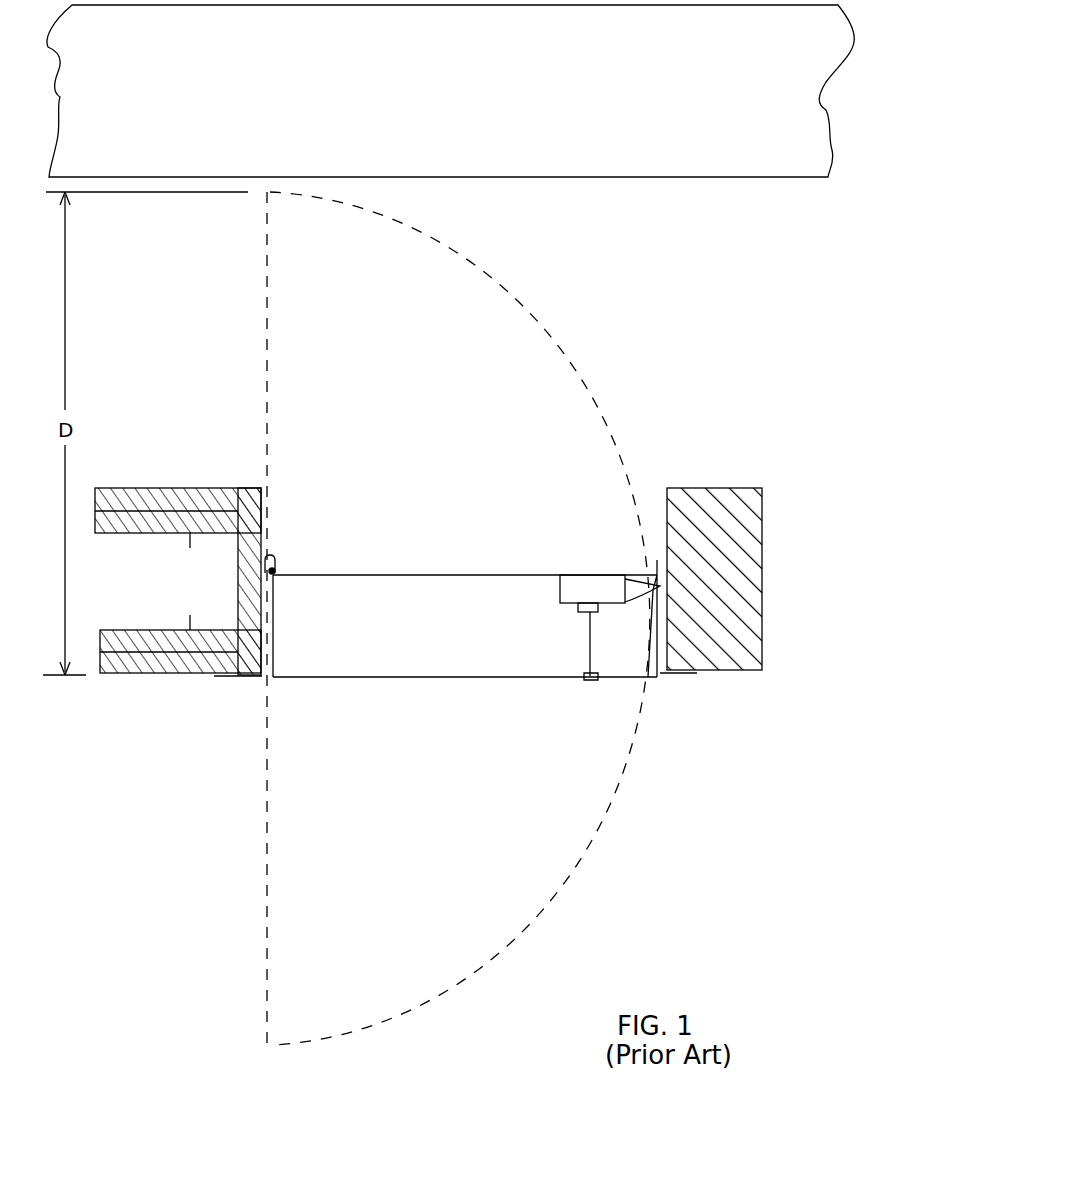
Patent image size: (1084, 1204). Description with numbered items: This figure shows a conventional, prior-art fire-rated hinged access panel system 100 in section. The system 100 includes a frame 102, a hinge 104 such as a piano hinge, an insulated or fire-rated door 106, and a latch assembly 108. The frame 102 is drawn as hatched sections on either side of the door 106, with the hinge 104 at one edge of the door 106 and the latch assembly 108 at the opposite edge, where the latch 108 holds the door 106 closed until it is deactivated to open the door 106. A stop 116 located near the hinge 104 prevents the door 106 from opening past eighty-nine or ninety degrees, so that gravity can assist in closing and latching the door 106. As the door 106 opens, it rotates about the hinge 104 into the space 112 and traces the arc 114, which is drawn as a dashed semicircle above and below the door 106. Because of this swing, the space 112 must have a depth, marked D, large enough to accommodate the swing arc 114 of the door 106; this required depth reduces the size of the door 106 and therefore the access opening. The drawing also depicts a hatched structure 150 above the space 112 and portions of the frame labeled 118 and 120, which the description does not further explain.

The hinged access panel system 100 is at (840, 286).
The frame 102 is at (418, 637).
The hinge 104 is at (276, 571).
The door 106 is at (460, 630).
The latch assembly 108 is at (580, 590).
The space 112 is at (437, 433).
The arc 114 is at (569, 326).
The stop 116 is at (272, 562).
The frame channel cavity 118 is at (210, 572).
The frame bottom flange 120 is at (143, 675).
The header structure 150 is at (420, 104).